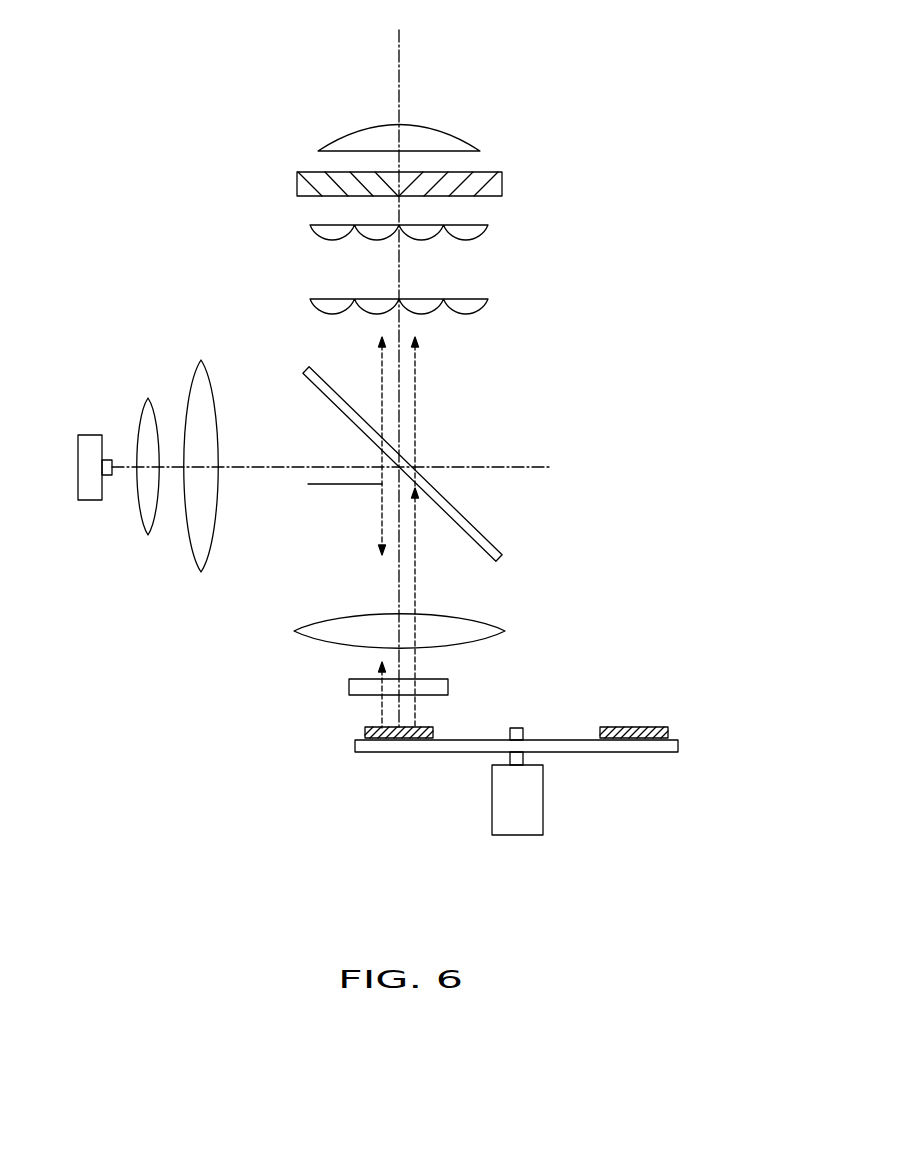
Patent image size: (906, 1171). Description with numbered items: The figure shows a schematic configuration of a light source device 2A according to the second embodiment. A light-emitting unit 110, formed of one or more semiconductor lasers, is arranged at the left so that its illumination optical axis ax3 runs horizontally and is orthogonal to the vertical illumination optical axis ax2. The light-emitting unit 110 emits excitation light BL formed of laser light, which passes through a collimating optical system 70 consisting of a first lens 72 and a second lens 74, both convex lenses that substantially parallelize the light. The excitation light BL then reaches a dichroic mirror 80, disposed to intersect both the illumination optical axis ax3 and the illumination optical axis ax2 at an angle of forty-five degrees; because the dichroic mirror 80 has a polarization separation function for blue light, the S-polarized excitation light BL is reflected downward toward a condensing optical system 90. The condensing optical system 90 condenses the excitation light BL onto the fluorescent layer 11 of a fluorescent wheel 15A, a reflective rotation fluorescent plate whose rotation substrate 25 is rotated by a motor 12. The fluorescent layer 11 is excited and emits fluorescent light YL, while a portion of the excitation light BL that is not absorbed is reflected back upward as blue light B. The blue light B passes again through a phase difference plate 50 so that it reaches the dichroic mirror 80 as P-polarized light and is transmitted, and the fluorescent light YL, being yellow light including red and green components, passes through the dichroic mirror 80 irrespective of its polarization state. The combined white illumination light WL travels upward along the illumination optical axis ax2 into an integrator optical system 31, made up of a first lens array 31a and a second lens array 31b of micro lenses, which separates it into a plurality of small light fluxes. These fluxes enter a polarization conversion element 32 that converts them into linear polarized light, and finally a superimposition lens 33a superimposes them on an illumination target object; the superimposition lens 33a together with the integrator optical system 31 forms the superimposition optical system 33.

The light source device 2A is at (670, 96).
The superimposition optical system 33 is at (317, 157).
The superimposition lens 33a is at (318, 150).
The polarization conversion element 32 is at (297, 190).
The integrator optical system 31 is at (338, 257).
The first lens array 31a is at (361, 287).
The second lens array 31b is at (311, 239).
The collimating optical system 70 is at (164, 407).
The first lens 72 is at (158, 400).
The second lens 74 is at (192, 362).
The light-emitting unit 110 is at (113, 425).
The dichroic mirror 80 is at (487, 537).
The condensing optical system 90 is at (294, 633).
The phase difference plate 50 is at (349, 684).
The fluorescent wheel 15A is at (516, 729).
The rotation substrate 25 is at (430, 753).
The fluorescent layer 11 is at (627, 728).
The motor 12 is at (543, 810).
The illumination optical axis ax2 is at (398, 92).
The illumination optical axis ax3 is at (265, 470).
The blue light B is at (383, 367).
The fluorescent light YL is at (415, 410).
The excitation light BL is at (380, 500).
The illumination light WL is at (482, 335).